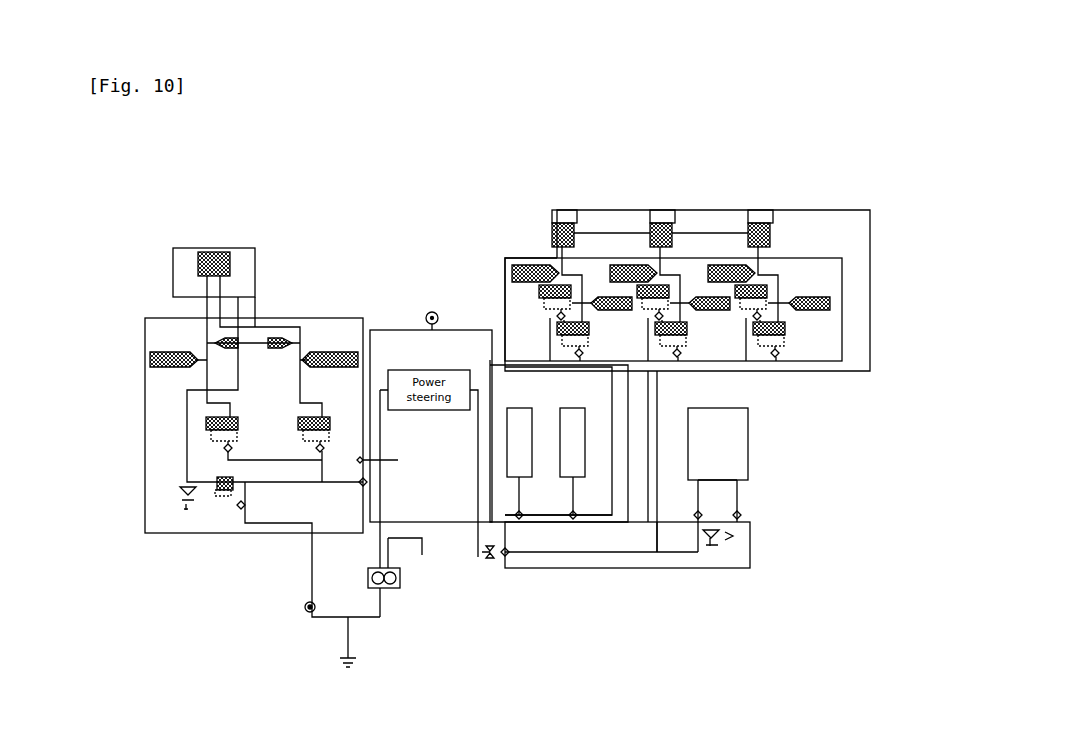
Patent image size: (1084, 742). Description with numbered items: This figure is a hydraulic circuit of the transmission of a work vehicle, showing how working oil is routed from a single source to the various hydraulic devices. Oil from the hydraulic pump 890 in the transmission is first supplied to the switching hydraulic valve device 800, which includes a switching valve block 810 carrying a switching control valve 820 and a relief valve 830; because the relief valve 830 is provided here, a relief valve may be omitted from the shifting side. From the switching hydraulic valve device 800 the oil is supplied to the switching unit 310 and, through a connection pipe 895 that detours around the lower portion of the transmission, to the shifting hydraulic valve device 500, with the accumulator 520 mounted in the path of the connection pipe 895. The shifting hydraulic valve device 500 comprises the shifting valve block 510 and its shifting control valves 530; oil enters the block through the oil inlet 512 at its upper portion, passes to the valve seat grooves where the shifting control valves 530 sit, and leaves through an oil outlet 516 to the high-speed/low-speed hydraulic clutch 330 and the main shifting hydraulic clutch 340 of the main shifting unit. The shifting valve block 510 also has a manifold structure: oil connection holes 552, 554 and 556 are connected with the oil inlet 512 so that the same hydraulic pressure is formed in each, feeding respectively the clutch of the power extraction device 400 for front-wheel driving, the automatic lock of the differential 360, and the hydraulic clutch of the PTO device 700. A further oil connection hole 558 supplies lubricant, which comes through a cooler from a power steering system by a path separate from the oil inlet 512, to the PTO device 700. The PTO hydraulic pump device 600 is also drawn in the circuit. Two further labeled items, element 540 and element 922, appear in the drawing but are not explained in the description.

The switching unit 310 is at (222, 252).
The switching hydraulic valve device 800 is at (338, 302).
The switching valve block 810 is at (146, 366).
The switching control valve 820 is at (218, 425).
The relief valve 830 is at (226, 490).
The check valve 922 is at (391, 470).
The connection pipe 895 is at (395, 330).
The accumulator 520 is at (438, 312).
The PTO hydraulic pump device 600 is at (395, 590).
The hydraulic pump 890 is at (305, 610).
The shifting valve block 510 is at (846, 283).
The shifting hydraulic valve device 500 is at (830, 376).
The oil outlet 516 is at (558, 256).
The high-speed/low-speed hydraulic clutch 330 is at (568, 224).
The main shifting hydraulic clutch 340 is at (668, 224).
The shifting control valve 530 is at (543, 286).
The accumulator 540 is at (540, 270).
The power extraction device 400 is at (518, 408).
The differential 360 is at (573, 408).
The PTO device 700 is at (720, 408).
The oil connection hole 552 is at (521, 514).
The oil connection hole 554 is at (575, 514).
The oil connection hole 556 is at (739, 514).
The oil connection hole 558 is at (696, 514).
The oil inlet 512 is at (503, 524).